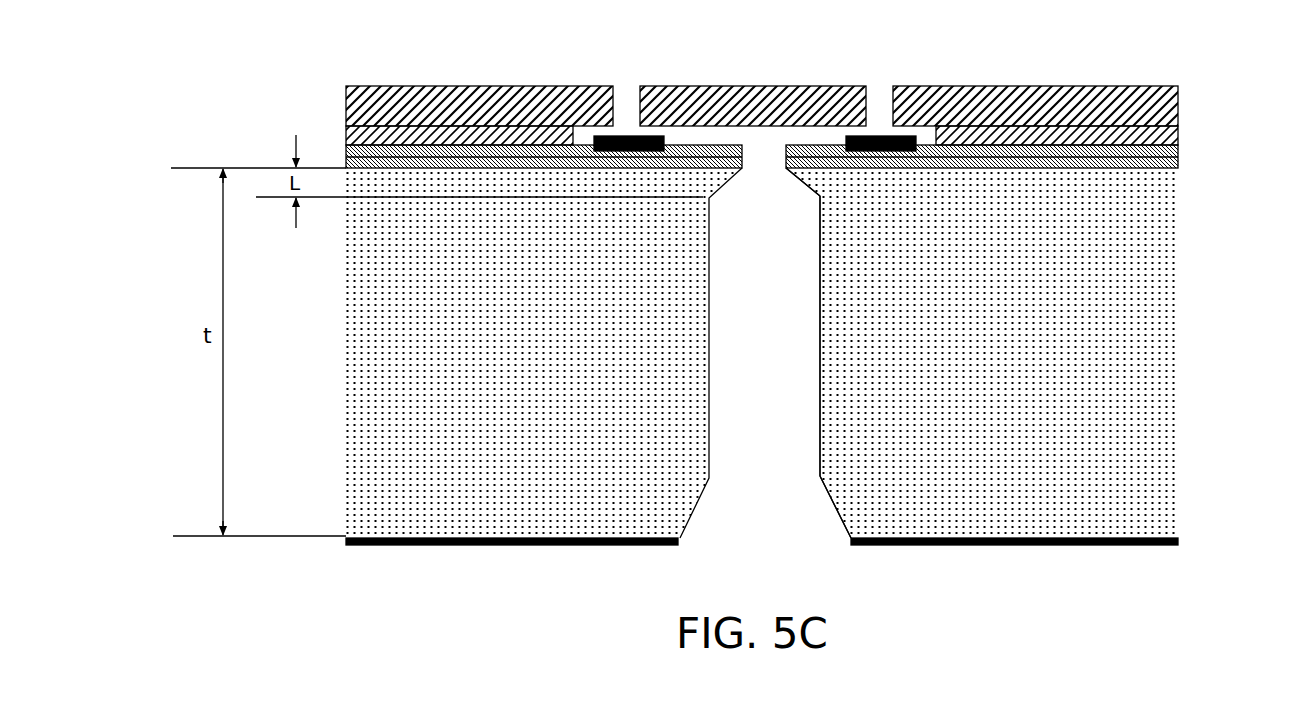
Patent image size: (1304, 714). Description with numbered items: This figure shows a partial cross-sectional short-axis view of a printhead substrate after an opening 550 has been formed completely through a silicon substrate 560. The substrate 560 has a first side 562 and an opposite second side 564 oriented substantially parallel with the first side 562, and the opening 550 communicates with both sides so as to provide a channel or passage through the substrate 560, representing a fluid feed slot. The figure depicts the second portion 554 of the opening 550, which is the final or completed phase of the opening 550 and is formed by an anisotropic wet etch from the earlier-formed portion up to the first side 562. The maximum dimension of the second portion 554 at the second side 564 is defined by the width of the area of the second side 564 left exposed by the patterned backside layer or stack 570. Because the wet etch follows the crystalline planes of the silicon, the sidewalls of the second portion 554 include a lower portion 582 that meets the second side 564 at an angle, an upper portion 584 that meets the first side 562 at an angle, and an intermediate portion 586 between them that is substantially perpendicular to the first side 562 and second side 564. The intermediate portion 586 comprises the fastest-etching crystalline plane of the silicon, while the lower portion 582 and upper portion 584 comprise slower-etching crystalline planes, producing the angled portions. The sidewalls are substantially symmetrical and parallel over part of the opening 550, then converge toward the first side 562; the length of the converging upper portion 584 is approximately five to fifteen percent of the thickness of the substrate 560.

The opening 550 is at (737, 518).
The second portion of opening 554 is at (772, 377).
The substrate 560 is at (1150, 328).
The first side 562 is at (1060, 148).
The second side 564 is at (1090, 538).
The patterned backside layer or stack 570 is at (488, 538).
The lower portion 582 is at (825, 495).
The upper portion 584 is at (802, 180).
The intermediate portion 586 is at (810, 300).